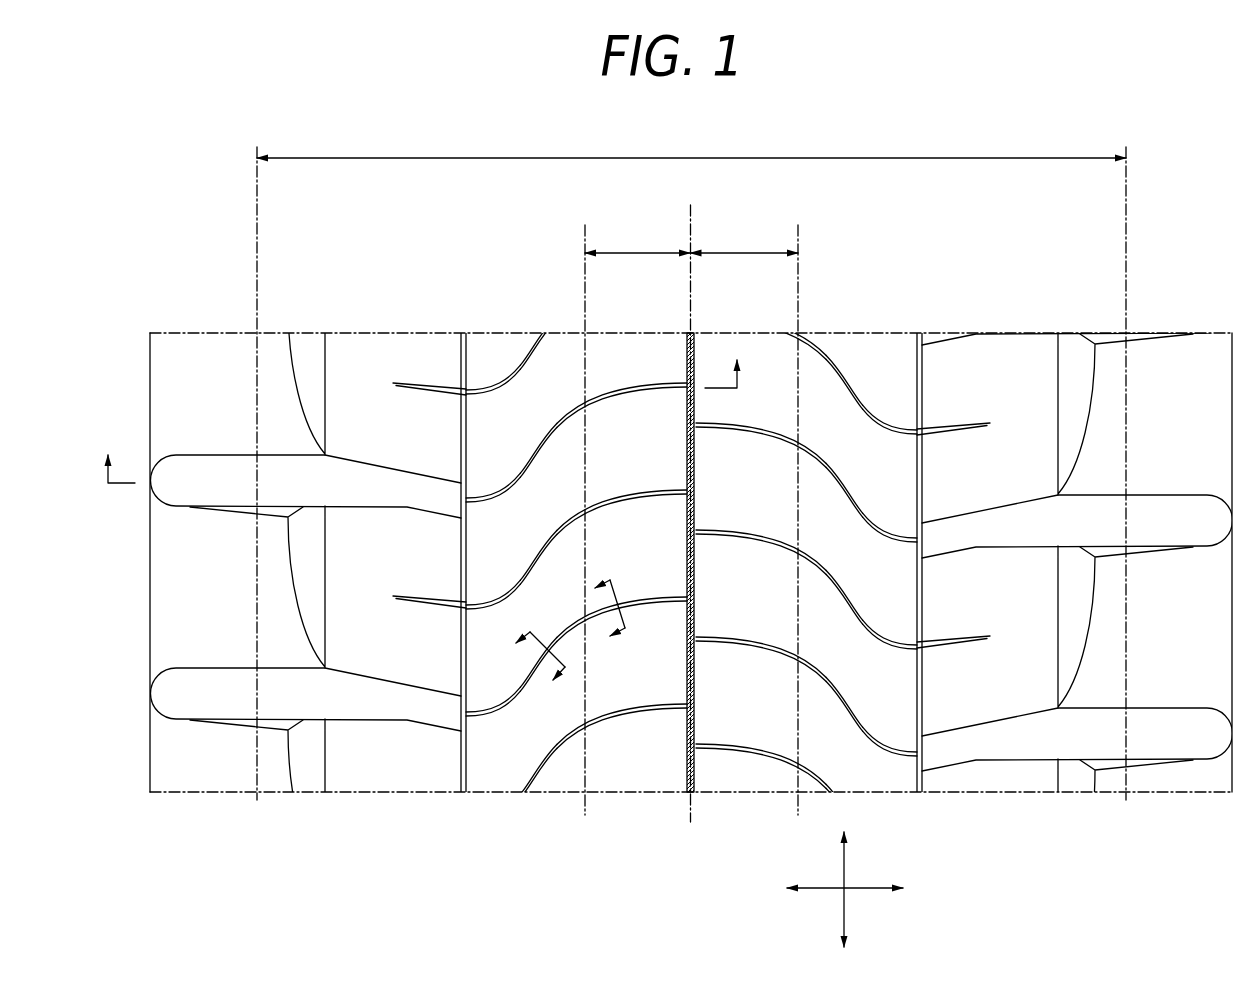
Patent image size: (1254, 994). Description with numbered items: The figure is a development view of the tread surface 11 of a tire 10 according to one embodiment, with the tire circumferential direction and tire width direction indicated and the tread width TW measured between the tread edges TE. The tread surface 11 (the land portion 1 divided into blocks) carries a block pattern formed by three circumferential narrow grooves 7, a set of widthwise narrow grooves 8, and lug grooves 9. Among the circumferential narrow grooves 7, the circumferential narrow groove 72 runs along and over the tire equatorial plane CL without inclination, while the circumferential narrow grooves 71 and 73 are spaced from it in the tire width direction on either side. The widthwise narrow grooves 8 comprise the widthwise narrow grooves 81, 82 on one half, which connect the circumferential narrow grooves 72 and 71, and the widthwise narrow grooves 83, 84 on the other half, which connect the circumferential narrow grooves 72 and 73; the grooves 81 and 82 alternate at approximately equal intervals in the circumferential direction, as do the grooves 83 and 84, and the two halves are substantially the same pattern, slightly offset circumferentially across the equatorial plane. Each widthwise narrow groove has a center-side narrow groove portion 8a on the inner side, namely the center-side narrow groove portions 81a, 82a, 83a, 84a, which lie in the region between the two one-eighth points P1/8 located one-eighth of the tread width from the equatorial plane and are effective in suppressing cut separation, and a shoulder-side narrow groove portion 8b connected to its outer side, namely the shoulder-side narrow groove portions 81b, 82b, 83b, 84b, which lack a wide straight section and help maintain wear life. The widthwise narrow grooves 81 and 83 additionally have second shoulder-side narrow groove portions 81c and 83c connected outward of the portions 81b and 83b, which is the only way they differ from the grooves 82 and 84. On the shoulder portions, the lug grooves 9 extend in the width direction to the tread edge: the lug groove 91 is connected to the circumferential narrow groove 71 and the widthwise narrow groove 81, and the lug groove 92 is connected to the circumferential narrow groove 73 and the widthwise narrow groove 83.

The tire 10 is at (403, 257).
The land portion 1 is at (691, 520).
The tread surface 11 is at (376, 328).
The circumferential narrow grooves 7 is at (691, 501).
The circumferential narrow groove 71 is at (461, 327).
The circumferential narrow groove 72 is at (686, 341).
The circumferential narrow groove 73 is at (918, 328).
The widthwise narrow grooves 8 is at (691, 569).
The widthwise narrow groove 81 is at (576, 442).
The widthwise narrow groove 82 is at (576, 549).
The widthwise narrow groove 83 is at (806, 482).
The widthwise narrow groove 84 is at (806, 589).
The center-side narrow groove portion 8a is at (622, 413).
The shoulder-side narrow groove portion 8b is at (595, 454).
The center-side narrow groove portion 81a is at (623, 399).
The shoulder-side narrow groove portion 81b is at (553, 437).
The second shoulder-side narrow groove portion 81c is at (494, 497).
The center-side narrow groove portion 82a is at (626, 497).
The shoulder-side narrow groove portion 82b is at (553, 544).
The center-side narrow groove portion 83a is at (752, 428).
The shoulder-side narrow groove portion 83b is at (837, 481).
The second shoulder-side narrow groove portion 83c is at (882, 528).
The center-side narrow groove portion 84a is at (752, 535).
The shoulder-side narrow groove portion 84b is at (837, 591).
The lug grooves 9 is at (692, 526).
The lug groove 91 is at (362, 486).
The lug groove 92 is at (1008, 525).